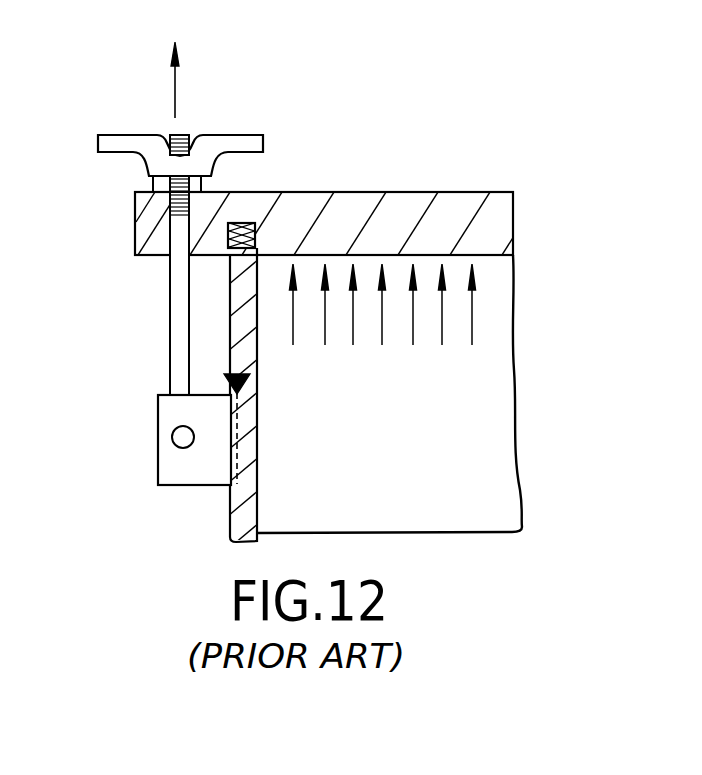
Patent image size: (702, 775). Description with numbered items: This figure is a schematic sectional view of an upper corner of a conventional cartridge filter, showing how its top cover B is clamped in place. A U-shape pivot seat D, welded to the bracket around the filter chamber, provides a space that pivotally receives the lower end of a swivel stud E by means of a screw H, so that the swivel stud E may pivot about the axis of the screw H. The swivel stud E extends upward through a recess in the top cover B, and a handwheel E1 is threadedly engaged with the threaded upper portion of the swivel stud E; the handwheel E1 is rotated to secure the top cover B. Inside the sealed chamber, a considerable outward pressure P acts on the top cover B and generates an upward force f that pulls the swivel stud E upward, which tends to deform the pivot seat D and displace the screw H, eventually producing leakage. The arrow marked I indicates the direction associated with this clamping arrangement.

The upward force f is at (171, 53).
The handwheel E1 is at (253, 138).
The top cover B is at (500, 227).
The swivel stud E is at (178, 298).
The clamping direction arrow I is at (240, 383).
The U-shape pivot seat D is at (173, 411).
The screw H is at (177, 443).
The outward pressure P is at (383, 322).